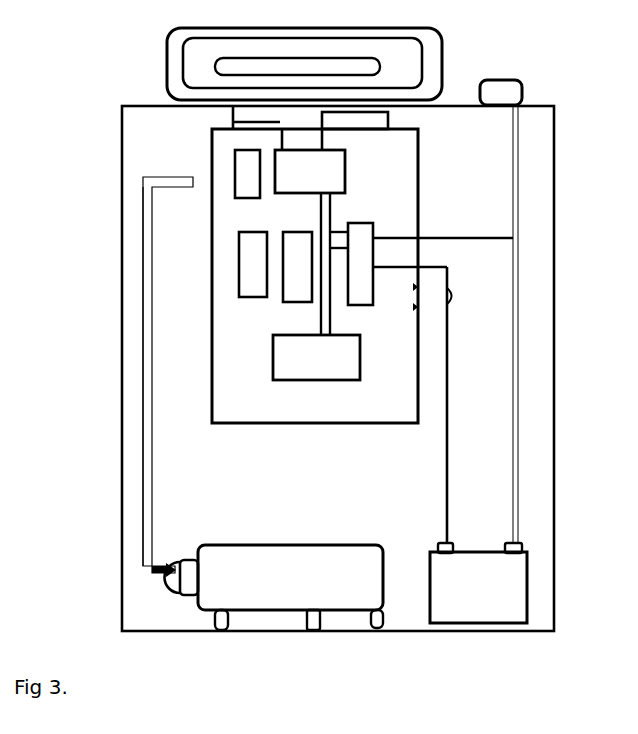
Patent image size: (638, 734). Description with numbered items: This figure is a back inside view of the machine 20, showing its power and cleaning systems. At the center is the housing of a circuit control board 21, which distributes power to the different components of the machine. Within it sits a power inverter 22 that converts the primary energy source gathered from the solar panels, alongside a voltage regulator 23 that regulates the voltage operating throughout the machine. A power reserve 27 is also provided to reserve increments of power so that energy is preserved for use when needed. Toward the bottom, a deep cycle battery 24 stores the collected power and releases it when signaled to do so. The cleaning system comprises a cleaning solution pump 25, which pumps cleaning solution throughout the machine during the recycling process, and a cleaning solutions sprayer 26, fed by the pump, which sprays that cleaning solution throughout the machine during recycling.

The back inside of the machine 20 is at (120, 113).
The circuit control board housing 21 is at (228, 143).
The power inverter 22 is at (375, 253).
The voltage regulator 23 is at (240, 282).
The deep cycle battery 24 is at (517, 585).
The cleaning solution pump 25 is at (205, 582).
The cleaning solutions sprayer 26 is at (138, 233).
The power reserve 27 is at (274, 359).